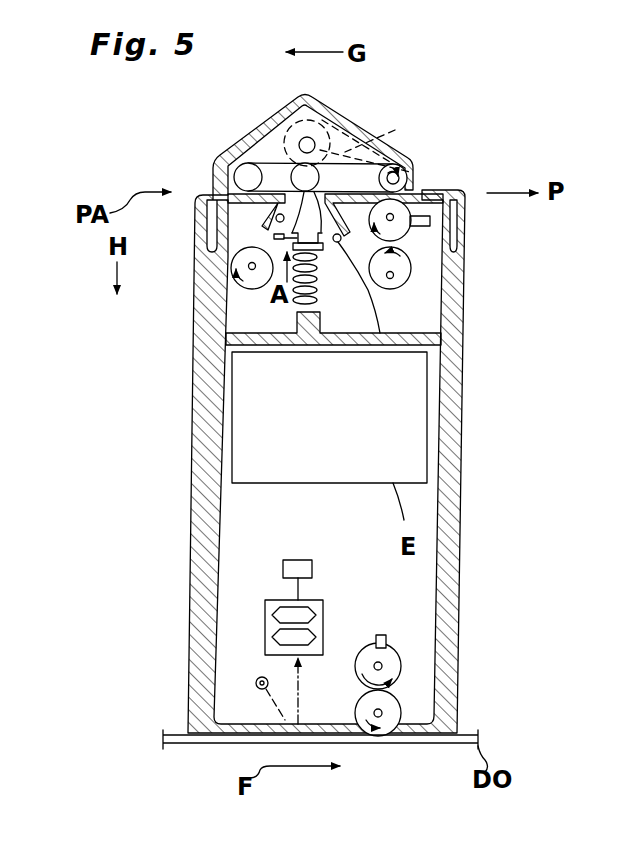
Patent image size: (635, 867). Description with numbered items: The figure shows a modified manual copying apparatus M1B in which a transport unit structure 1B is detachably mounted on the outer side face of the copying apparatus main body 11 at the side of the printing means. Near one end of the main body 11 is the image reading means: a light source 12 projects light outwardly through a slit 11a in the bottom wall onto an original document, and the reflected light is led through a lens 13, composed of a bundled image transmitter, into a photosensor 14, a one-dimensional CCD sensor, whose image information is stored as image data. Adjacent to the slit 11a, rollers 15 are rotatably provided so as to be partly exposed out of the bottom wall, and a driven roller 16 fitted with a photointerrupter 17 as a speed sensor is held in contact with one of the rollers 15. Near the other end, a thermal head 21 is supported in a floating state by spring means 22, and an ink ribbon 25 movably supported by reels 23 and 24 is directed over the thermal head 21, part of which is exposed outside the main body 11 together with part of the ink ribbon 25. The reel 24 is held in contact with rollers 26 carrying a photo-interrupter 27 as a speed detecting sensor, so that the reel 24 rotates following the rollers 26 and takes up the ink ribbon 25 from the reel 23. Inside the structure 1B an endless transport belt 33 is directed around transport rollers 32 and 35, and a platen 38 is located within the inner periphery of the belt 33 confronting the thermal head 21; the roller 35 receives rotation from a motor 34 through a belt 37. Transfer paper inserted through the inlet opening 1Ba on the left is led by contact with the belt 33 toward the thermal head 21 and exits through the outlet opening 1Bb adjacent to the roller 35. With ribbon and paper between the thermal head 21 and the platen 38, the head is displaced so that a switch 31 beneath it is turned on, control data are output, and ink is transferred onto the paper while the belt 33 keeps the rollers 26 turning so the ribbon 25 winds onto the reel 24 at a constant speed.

The transport unit structure 1B is at (377, 128).
The inlet opening 1Ba is at (198, 188).
The outlet opening 1Bb is at (451, 178).
The modified copying apparatus M1B is at (473, 113).
The copying apparatus main body 11 is at (463, 390).
The slit 11a is at (304, 714).
The light source 12 is at (258, 678).
The lens 13 is at (322, 600).
The photosensor 14 is at (298, 558).
The rollers 15 is at (394, 698).
The driven roller 16 is at (365, 650).
The photointerrupter 17 is at (386, 638).
The thermal head 21 is at (326, 242).
The spring means 22 is at (297, 296).
The reel 23 is at (274, 236).
The reel 24 is at (411, 278).
The ink ribbon 25 is at (443, 336).
The rollers 26 is at (411, 234).
The photo-interrupter 27 is at (431, 221).
The switch 31 is at (237, 258).
The transport roller 32 is at (237, 168).
The transport belt 33 is at (262, 162).
The motor 34 is at (350, 108).
The transport roller 35 is at (404, 172).
The belt 37 is at (398, 131).
The platen 38 is at (292, 170).